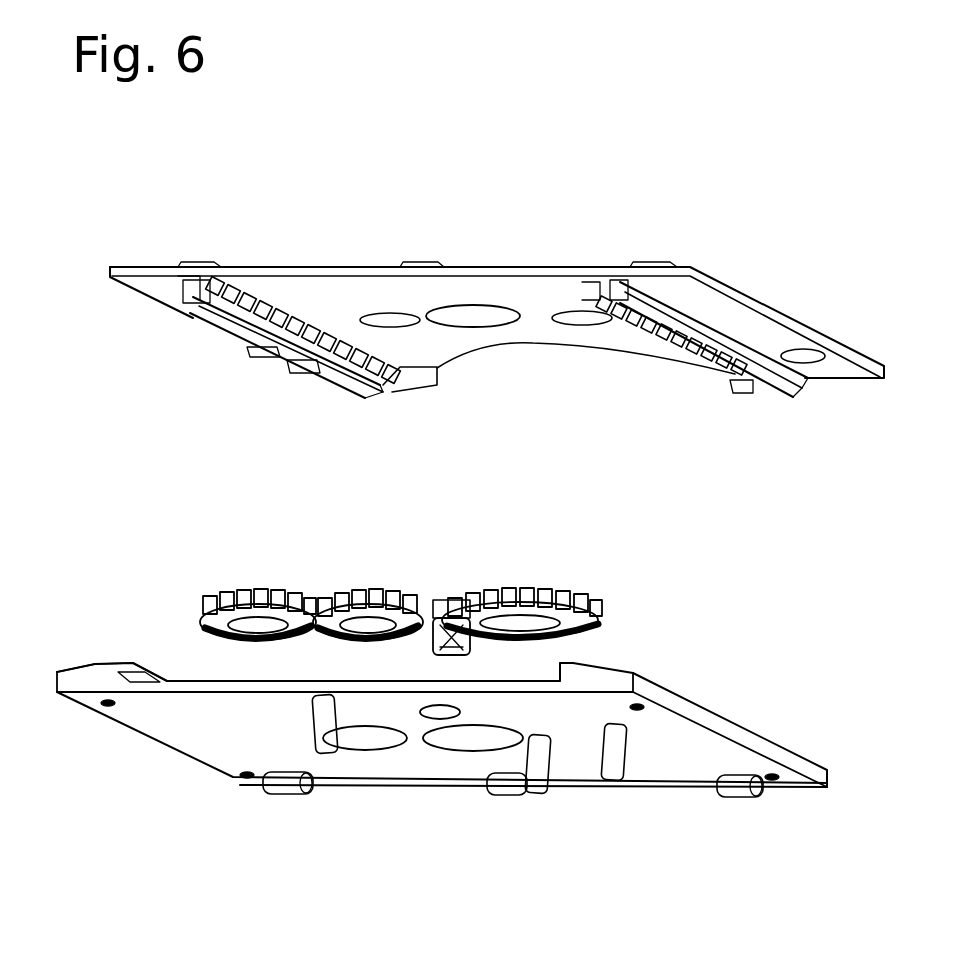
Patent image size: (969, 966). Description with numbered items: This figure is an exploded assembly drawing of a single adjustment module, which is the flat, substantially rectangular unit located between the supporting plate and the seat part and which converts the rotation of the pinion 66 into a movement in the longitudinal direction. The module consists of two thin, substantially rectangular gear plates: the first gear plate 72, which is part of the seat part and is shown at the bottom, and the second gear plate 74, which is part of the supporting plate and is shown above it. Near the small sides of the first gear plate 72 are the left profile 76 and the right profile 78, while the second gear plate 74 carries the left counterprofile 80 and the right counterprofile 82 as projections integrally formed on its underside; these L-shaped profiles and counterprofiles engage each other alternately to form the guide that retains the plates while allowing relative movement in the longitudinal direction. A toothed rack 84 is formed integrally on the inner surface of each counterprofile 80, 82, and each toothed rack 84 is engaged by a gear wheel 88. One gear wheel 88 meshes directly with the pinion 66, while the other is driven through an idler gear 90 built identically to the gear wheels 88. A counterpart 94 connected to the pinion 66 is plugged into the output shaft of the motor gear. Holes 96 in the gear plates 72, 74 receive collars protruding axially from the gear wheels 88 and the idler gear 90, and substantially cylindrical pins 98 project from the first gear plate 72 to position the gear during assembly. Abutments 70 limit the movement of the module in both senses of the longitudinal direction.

The pinion 66 is at (443, 596).
The abutments 70 is at (410, 386).
The first gear plate 72 is at (188, 733).
The second gear plate 74 is at (549, 231).
The left profile 76 is at (575, 660).
The right profile 78 is at (102, 680).
The left counterprofile 80 is at (797, 390).
The right counterprofile 82 is at (197, 313).
The toothed rack 84 is at (243, 297).
The gear wheel 88 is at (240, 583).
The idler gear 90 is at (338, 592).
The counterpart 94 is at (463, 655).
The holes 96 is at (488, 322).
The cylindrical pins 98 is at (627, 760).